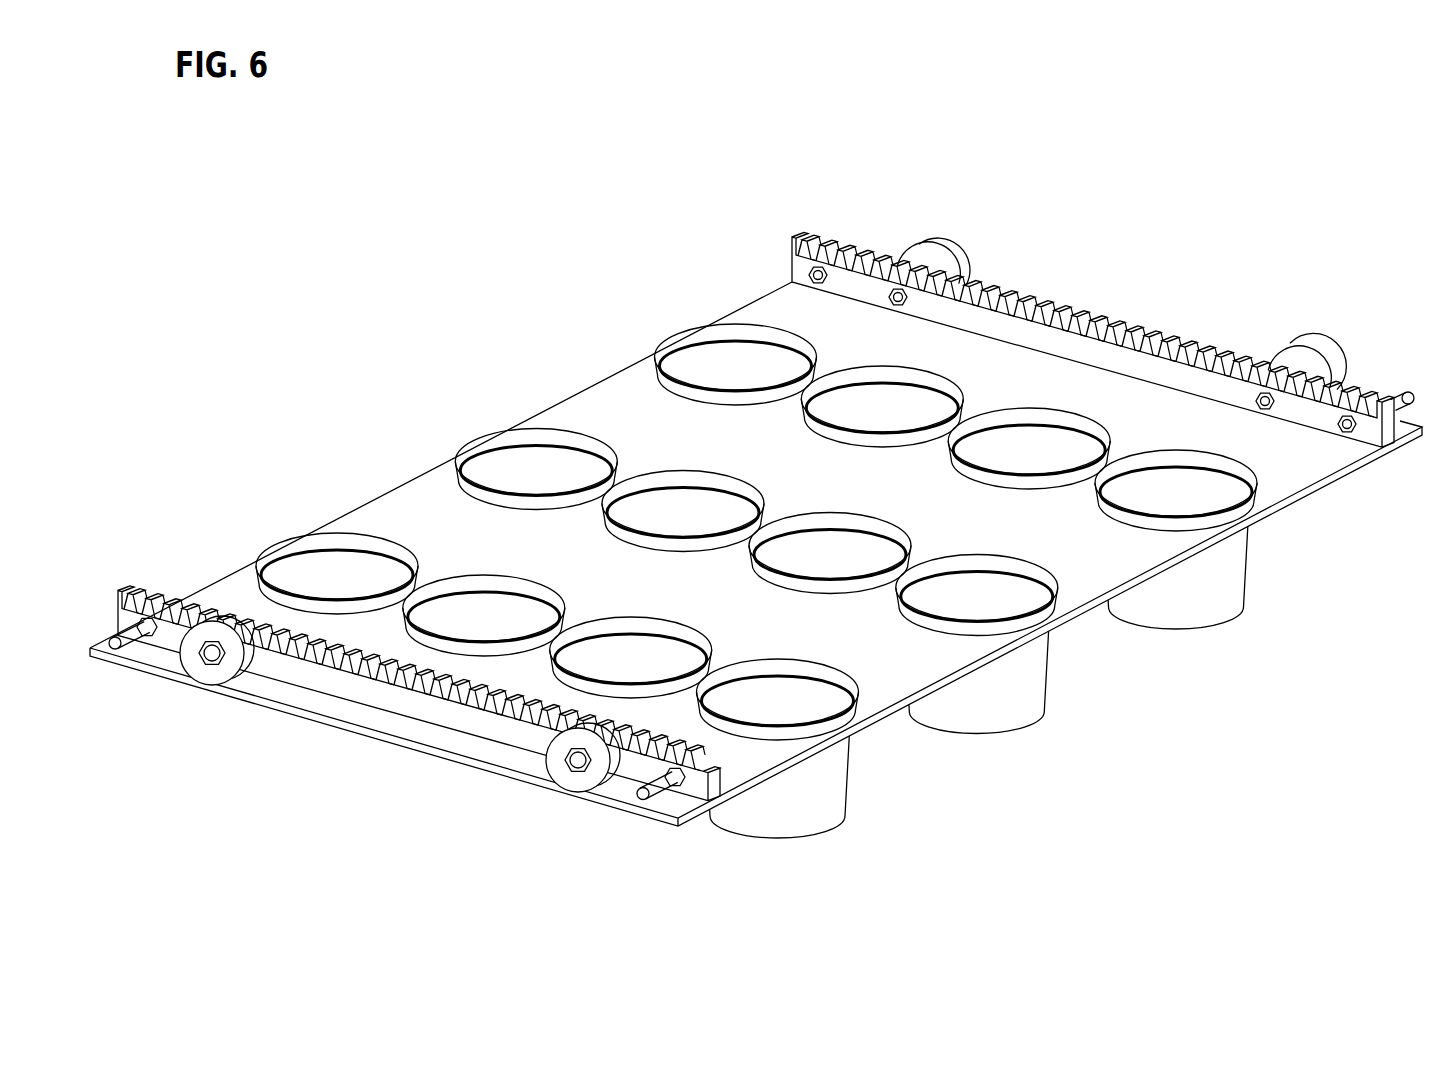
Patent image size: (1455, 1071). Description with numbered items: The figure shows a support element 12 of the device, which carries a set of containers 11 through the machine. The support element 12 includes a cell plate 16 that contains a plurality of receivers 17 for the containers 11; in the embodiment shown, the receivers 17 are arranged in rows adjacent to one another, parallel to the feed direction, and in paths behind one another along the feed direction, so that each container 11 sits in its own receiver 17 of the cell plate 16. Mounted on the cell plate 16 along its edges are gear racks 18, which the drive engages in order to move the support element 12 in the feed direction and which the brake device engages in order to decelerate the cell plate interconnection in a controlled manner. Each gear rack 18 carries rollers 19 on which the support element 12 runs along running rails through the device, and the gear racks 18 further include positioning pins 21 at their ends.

The container 11 is at (1212, 595).
The support element 12 is at (766, 505).
The cell plate 16 is at (1038, 383).
The receiver 17 is at (1157, 533).
The gear rack 18 is at (428, 700).
The roller 19 is at (942, 246).
The positioning pin 21 is at (1400, 396).